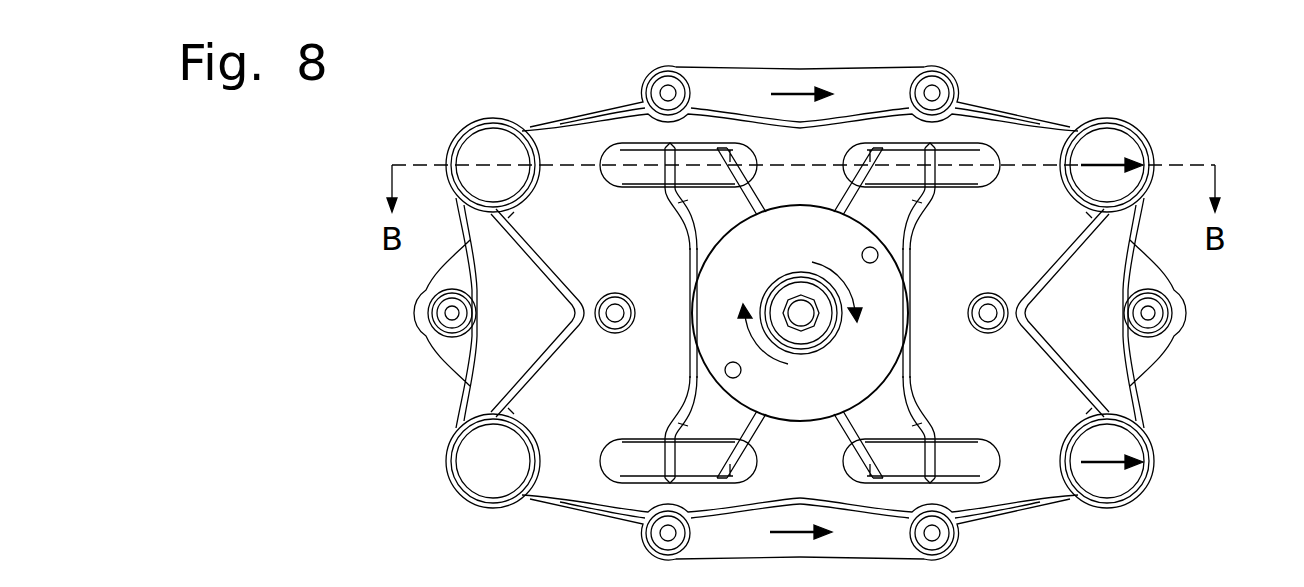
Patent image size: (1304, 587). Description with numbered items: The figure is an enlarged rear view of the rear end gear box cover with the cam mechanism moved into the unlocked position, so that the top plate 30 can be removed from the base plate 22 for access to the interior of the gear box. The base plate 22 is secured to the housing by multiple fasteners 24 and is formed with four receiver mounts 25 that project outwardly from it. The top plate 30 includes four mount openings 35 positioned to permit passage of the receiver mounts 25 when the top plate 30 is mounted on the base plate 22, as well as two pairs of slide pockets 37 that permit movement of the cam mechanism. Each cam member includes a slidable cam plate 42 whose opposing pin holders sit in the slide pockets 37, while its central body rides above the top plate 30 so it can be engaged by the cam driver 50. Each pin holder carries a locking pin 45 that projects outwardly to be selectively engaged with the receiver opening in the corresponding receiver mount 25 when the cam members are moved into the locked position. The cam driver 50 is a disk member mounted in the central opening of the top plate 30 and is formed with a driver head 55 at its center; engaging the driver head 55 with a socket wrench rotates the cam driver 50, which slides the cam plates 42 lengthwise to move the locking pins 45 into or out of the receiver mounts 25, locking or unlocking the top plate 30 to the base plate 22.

The base plate 22 is at (867, 92).
The fasteners 24 is at (962, 98).
The receiver mounts 25 is at (1113, 145).
The top plate 30 is at (1040, 150).
The mount openings 35 is at (490, 121).
The slide pockets 37 is at (650, 170).
The cam plate 42 is at (895, 235).
The locking pin 45 is at (622, 170).
The cam driver 50 is at (793, 214).
The driver head 55 is at (802, 312).